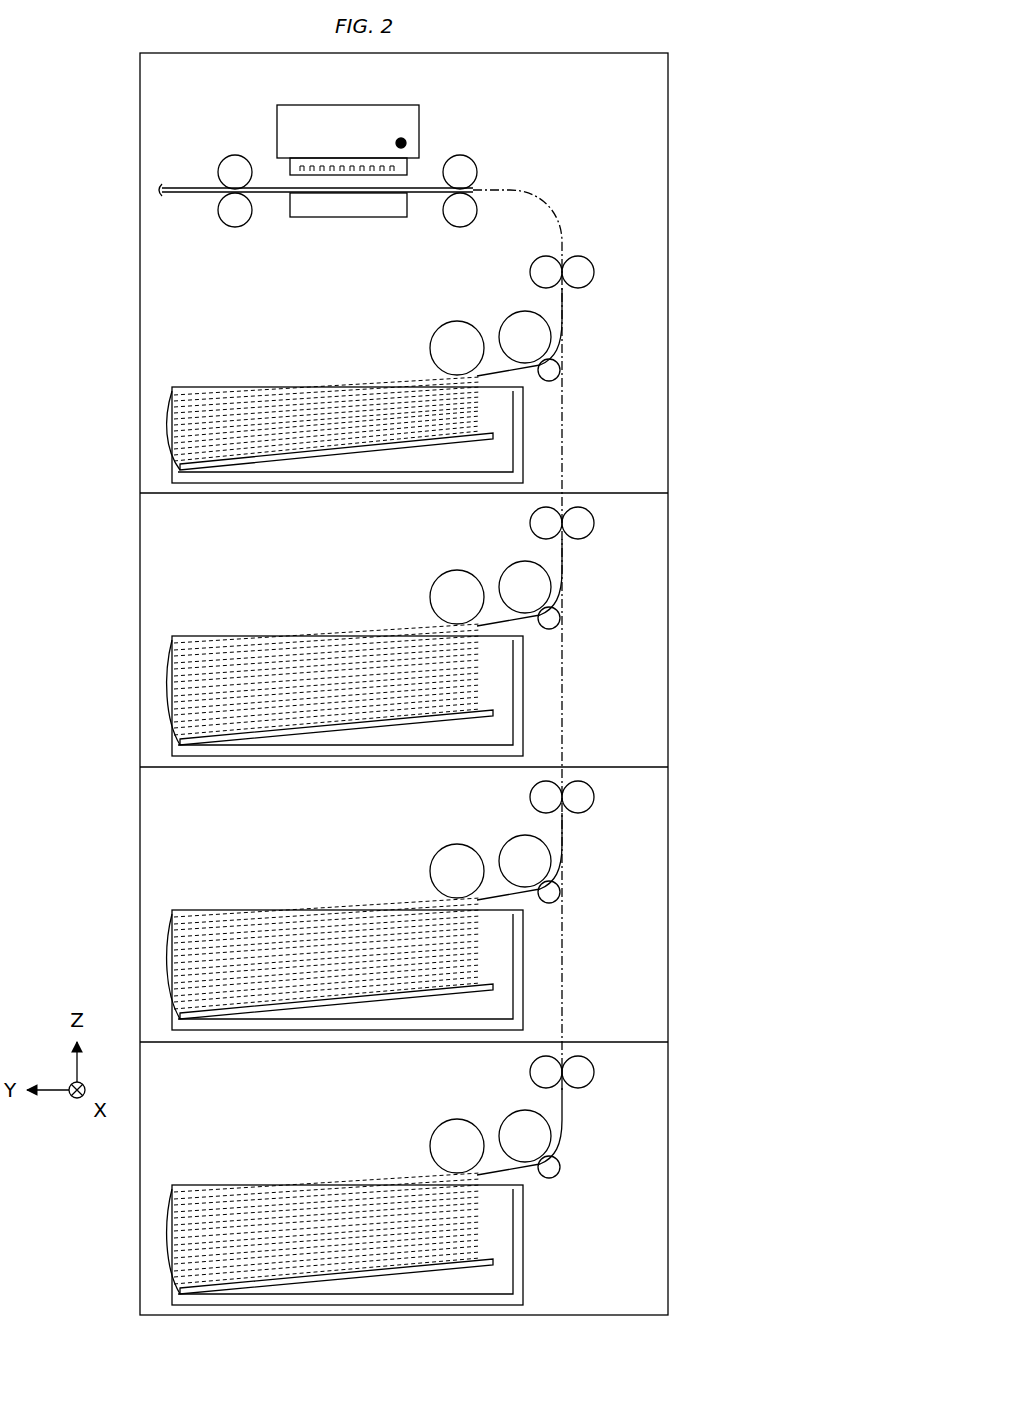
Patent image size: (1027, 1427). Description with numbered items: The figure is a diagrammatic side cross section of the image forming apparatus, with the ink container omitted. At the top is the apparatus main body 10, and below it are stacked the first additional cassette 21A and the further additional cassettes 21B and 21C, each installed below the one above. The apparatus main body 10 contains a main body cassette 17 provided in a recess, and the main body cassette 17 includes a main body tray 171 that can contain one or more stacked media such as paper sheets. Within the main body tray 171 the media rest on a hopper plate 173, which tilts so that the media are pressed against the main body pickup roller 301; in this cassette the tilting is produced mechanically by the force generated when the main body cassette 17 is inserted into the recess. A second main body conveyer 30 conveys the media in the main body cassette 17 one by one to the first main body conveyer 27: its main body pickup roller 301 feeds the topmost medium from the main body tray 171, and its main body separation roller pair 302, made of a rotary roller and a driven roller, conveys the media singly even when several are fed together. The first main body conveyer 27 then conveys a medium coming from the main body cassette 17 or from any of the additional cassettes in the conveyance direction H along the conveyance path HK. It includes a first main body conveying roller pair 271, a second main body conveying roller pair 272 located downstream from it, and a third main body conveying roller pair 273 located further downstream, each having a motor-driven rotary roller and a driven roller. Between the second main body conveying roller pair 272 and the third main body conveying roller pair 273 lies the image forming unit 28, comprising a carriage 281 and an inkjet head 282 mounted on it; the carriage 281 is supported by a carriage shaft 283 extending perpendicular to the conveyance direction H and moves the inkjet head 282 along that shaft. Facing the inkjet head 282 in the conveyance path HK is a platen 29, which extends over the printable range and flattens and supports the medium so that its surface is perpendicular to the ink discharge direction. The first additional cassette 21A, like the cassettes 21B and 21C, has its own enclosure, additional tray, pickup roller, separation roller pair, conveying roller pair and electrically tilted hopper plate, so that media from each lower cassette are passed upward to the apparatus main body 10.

The apparatus main body 10 is at (668, 298).
The main body cassette 17 is at (307, 401).
The main body tray 171 is at (292, 387).
The hopper plate 173 is at (431, 450).
The first additional cassette 21A is at (670, 529).
The additional cassette 21B is at (670, 803).
The additional cassette 21C is at (670, 1078).
The first main body conveyer 27 is at (580, 208).
The first main body conveying roller pair 271 is at (596, 275).
The second main body conveying roller pair 272 is at (460, 228).
The third main body conveying roller pair 273 is at (237, 229).
The image forming unit 28 is at (348, 116).
The carriage 281 is at (348, 105).
The inkjet head 282 is at (288, 166).
The carriage shaft 283 is at (396, 140).
The platen 29 is at (345, 218).
The second main body conveyer 30 is at (582, 345).
The main body pickup roller 301 is at (457, 321).
The main body separation roller pair 302 is at (518, 312).
The conveyance path HK is at (516, 191).
The conveyance direction H is at (178, 212).